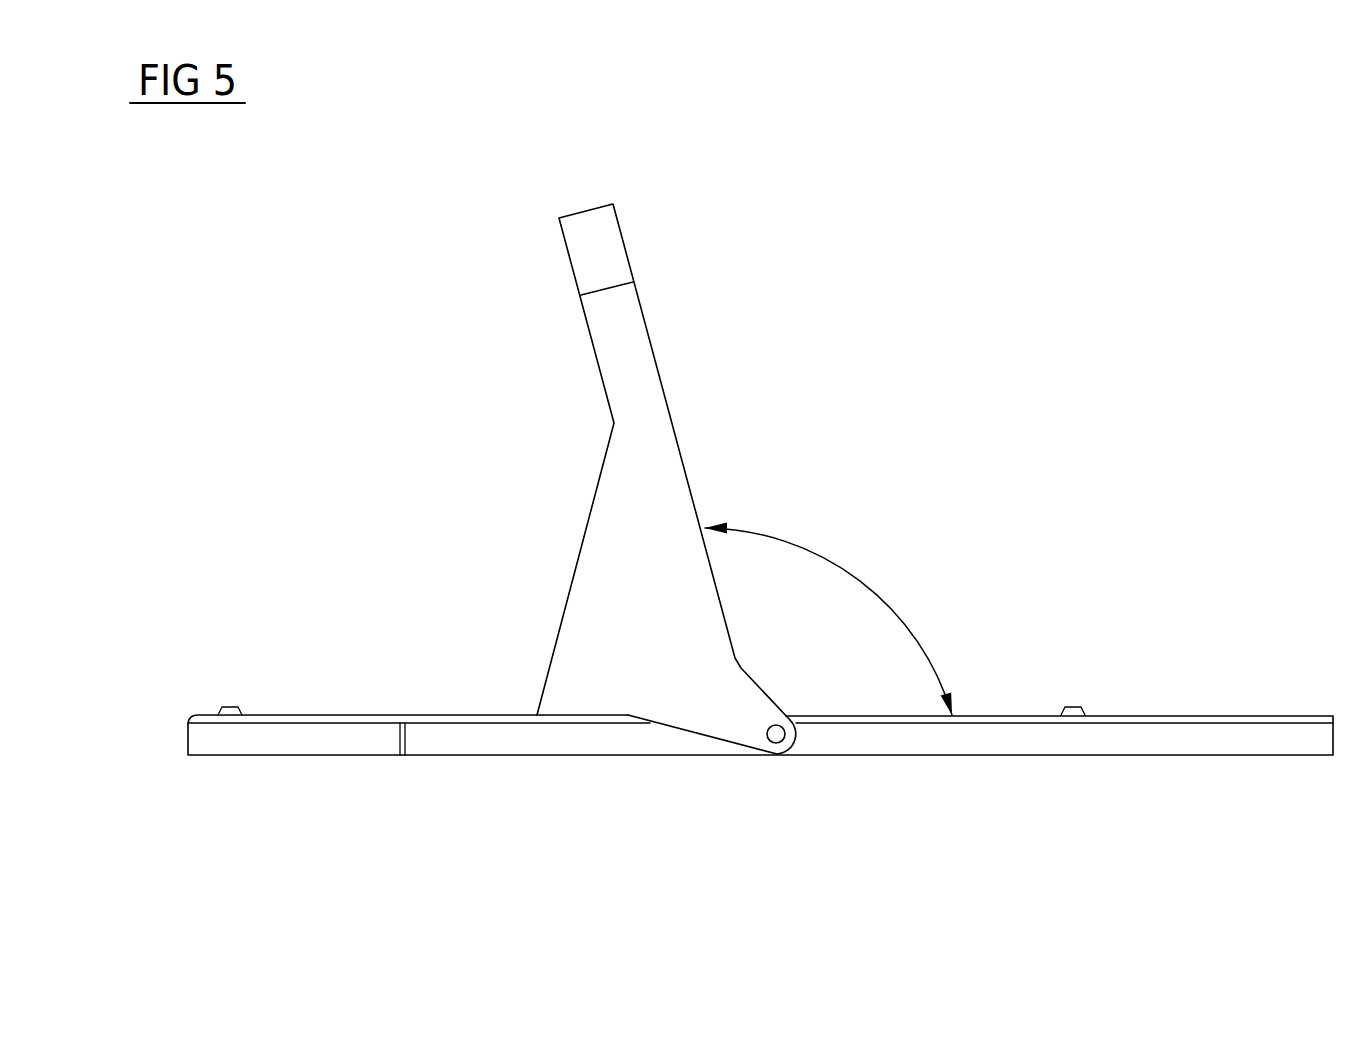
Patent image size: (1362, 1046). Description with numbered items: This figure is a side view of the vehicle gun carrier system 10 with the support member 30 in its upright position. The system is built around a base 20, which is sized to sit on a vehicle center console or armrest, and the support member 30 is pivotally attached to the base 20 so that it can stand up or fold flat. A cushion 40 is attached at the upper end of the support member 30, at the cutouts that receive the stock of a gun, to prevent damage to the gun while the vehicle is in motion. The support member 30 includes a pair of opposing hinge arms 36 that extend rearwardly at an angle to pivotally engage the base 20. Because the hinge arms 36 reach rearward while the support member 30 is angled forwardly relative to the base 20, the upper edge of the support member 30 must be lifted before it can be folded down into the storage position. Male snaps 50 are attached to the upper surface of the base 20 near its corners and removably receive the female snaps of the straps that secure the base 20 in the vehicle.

The vehicle gun carrier system 10 is at (1097, 150).
The base 20 is at (1217, 697).
The support member 30 is at (660, 367).
The hinge arms 36 is at (698, 698).
The cushion 40 is at (580, 249).
The male snaps 50 is at (234, 688).